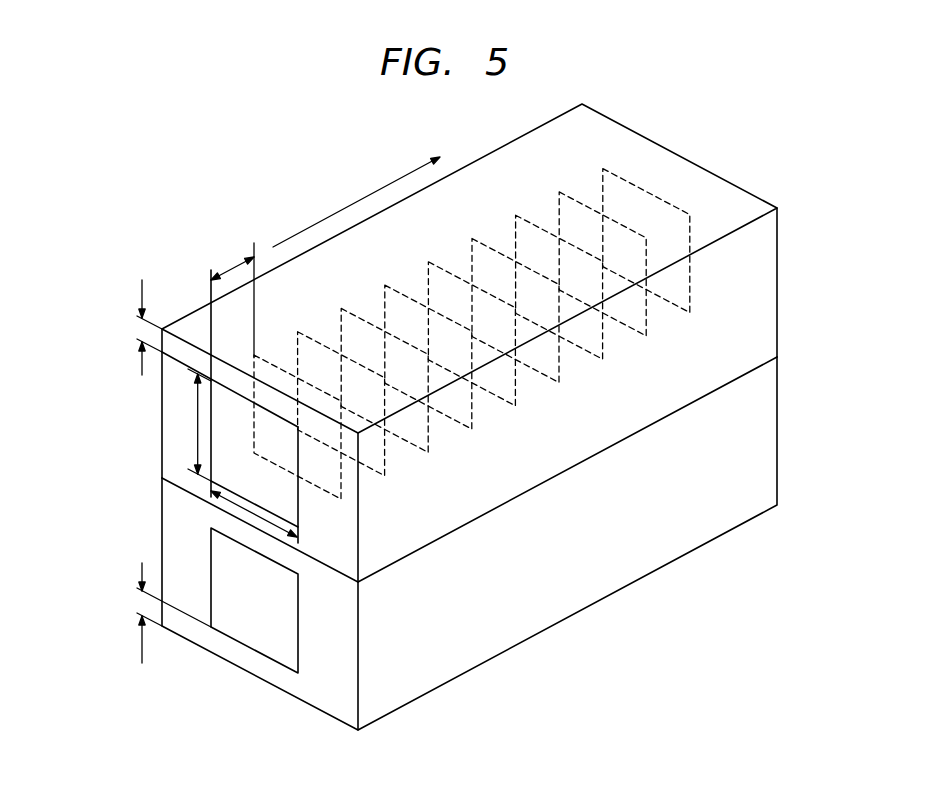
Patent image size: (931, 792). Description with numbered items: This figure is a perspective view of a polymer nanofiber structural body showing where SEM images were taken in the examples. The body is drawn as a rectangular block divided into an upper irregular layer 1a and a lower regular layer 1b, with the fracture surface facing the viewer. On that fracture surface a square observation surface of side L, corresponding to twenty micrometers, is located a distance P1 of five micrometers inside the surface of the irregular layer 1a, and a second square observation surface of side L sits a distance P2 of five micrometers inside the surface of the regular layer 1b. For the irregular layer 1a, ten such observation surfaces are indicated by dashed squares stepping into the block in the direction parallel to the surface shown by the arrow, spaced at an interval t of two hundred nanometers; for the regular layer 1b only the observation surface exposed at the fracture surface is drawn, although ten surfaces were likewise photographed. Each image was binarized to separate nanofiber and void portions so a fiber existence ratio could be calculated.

The irregular layer 1a is at (497, 158).
The regular layer 1b is at (590, 597).
The observation surface side length L is at (197, 423).
The interval t is at (232, 260).
The depth inside irregular layer surface P1 is at (137, 327).
The depth inside regular layer surface P2 is at (161, 613).